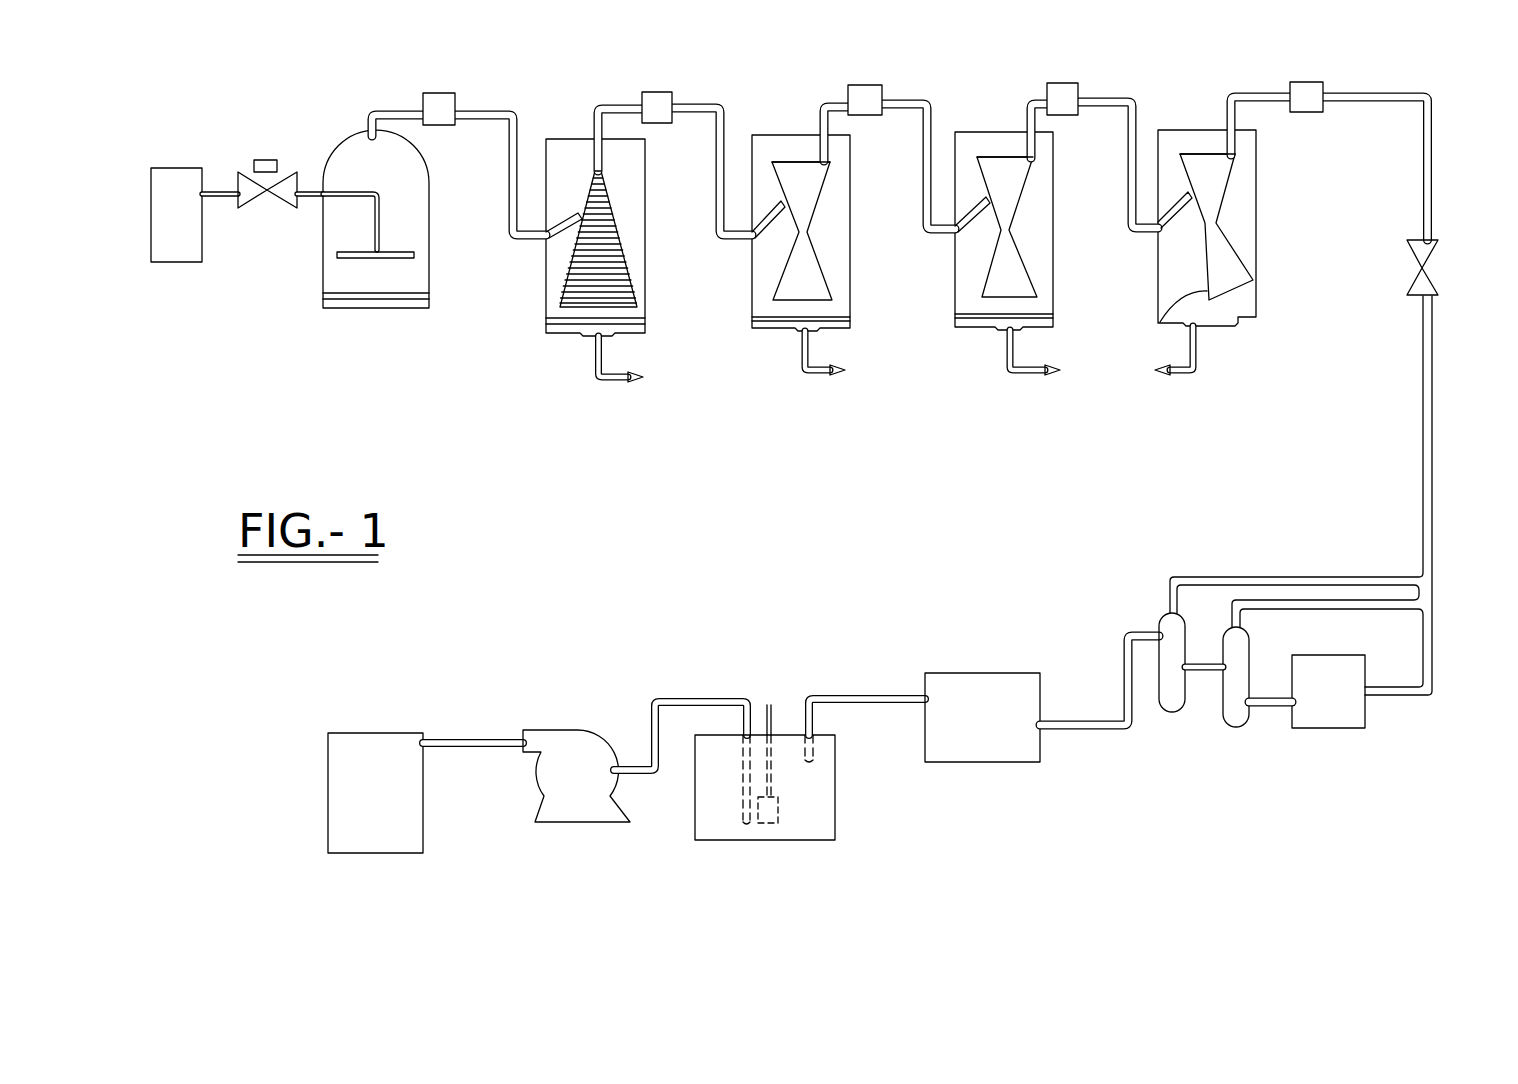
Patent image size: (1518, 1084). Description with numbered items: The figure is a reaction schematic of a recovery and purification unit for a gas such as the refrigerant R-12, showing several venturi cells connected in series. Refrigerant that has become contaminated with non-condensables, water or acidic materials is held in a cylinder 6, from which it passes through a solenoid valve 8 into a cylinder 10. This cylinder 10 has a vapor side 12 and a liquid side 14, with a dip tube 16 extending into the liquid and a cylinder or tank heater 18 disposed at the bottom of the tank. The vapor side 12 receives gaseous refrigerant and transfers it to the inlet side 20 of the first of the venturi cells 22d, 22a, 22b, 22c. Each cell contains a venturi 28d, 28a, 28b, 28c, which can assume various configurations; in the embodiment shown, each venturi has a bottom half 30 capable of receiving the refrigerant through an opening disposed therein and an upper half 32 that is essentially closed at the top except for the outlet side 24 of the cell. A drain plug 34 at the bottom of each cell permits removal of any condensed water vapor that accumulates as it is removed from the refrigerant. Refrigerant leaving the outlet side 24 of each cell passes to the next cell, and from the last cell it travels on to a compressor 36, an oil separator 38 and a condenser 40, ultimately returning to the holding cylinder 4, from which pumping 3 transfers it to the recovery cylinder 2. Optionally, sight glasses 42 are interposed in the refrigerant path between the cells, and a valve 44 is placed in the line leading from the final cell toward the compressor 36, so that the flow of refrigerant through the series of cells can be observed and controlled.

The recovery cylinder 2 is at (362, 733).
The pumping 3 is at (551, 730).
The holding cylinder 4 is at (778, 840).
The cylinder 6 is at (167, 168).
The solenoid valve 8 is at (240, 175).
The cylinder 10 is at (322, 258).
The vapor side 12 is at (374, 110).
The liquid side 14 is at (307, 190).
The dip tube 16 is at (373, 222).
The cylinder or tank heater 18 is at (430, 300).
The inlet side 20 is at (550, 246).
The venturi cell 22a is at (752, 270).
The venturi cell 22b is at (956, 267).
The venturi cell 22c is at (1158, 266).
The venturi cell 22d is at (547, 275).
The outlet side 24 is at (613, 106).
The venturi 28a is at (818, 206).
The venturi 28b is at (1026, 201).
The venturi 28c is at (1228, 204).
The venturi 28d is at (616, 211).
The bottom half 30 is at (560, 304).
The upper half 32 is at (596, 174).
The drain plug 34 is at (595, 367).
The compressor 36 is at (1338, 728).
The oil separator 38 is at (1172, 712).
The condenser 40 is at (983, 762).
The sight glass 42 is at (437, 93).
The valve 44 is at (1437, 250).